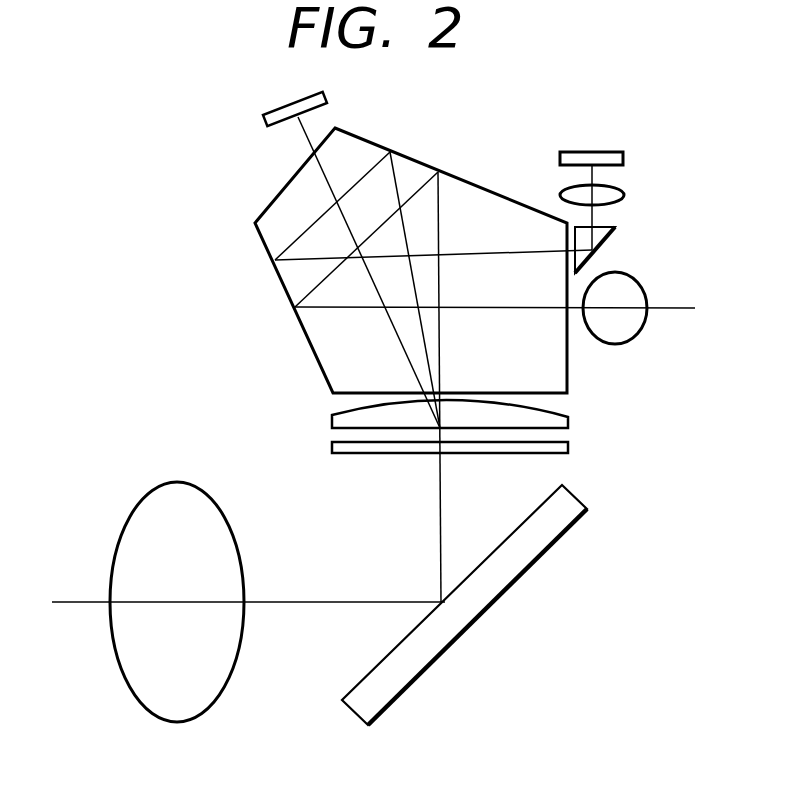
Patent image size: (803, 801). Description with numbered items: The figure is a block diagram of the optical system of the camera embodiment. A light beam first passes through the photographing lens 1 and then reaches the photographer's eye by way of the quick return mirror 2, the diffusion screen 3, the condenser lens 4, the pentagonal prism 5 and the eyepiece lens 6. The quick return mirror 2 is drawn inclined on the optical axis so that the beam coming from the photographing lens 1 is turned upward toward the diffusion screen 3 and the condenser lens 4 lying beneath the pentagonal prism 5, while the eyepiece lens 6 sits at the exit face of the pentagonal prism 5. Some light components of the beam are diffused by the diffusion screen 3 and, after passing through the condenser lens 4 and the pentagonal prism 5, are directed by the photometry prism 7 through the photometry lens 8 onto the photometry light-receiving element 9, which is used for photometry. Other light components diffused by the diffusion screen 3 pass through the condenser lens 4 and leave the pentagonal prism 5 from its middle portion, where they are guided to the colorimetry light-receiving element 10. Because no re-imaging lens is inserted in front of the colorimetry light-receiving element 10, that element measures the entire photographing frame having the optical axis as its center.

The photographing lens 1 is at (208, 490).
The quick return mirror 2 is at (570, 528).
The diffusion screen 3 is at (568, 445).
The condenser lens 4 is at (565, 412).
The pentagonal prism 5 is at (477, 183).
The eyepiece lens 6 is at (642, 333).
The photometry prism 7 is at (615, 237).
The photometry lens 8 is at (625, 197).
The photometry light-receiving element 9 is at (623, 158).
The colorimetry light-receiving element 10 is at (272, 108).